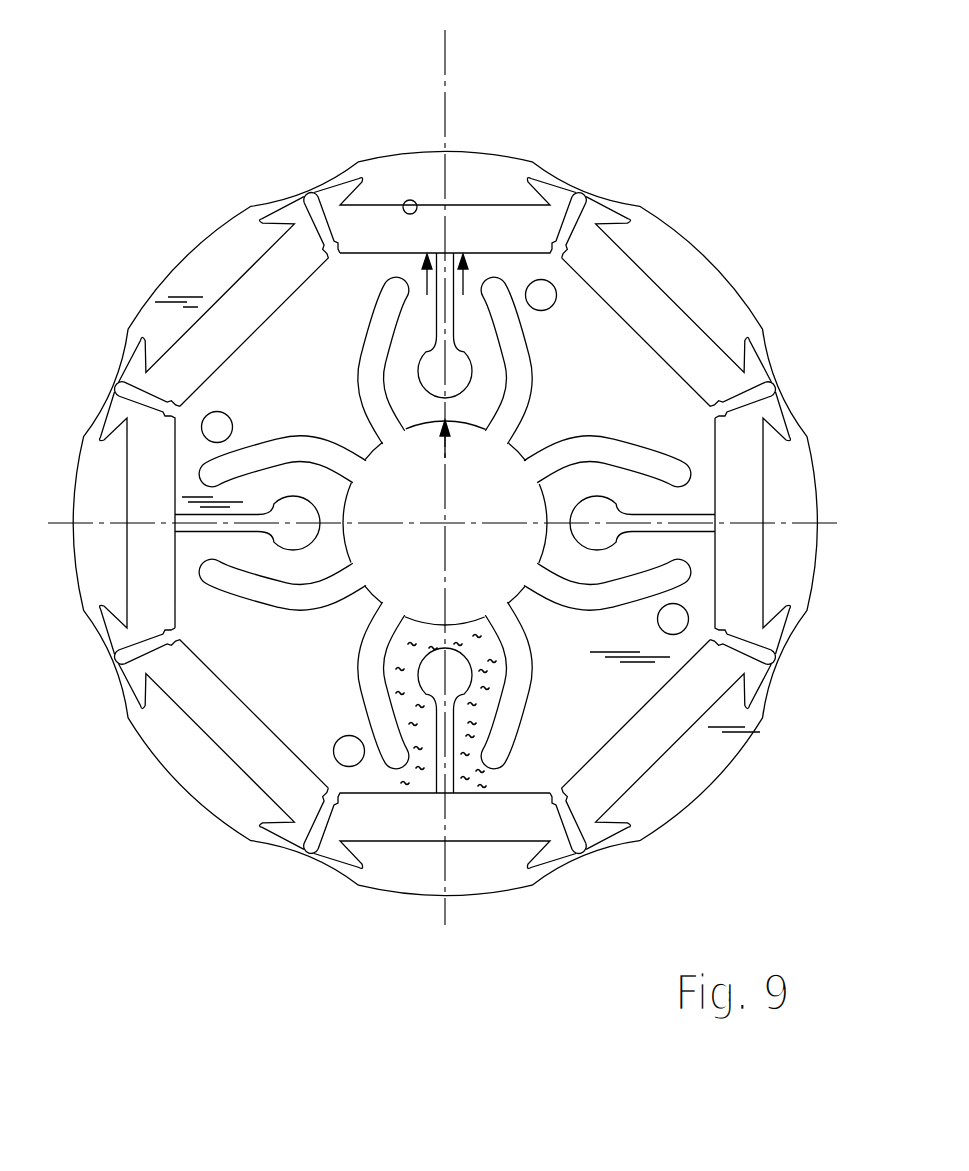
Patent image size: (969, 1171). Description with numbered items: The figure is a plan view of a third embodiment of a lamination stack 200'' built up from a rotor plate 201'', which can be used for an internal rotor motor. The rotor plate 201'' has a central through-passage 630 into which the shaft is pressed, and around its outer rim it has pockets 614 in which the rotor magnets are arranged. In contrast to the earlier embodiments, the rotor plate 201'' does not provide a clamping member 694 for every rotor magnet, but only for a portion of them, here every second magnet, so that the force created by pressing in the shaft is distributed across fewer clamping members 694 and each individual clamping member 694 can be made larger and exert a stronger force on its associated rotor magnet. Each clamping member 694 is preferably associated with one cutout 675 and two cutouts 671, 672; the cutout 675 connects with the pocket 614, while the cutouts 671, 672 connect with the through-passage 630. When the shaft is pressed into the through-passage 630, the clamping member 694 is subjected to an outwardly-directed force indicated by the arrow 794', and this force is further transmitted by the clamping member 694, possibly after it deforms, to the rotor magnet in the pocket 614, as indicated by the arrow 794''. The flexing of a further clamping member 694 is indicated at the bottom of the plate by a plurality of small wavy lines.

The lamination stack 200'' is at (442, 457).
The rotor plate 201'' is at (674, 302).
The pocket 614 is at (410, 200).
The through-passage 630 is at (540, 558).
The cutout 671 is at (382, 337).
The cutout 672 is at (517, 336).
The cutout 675 is at (445, 260).
The clamping member 694 is at (487, 387).
The arrow indicating outwardly-directed force 794' is at (407, 469).
The arrow indicating transmitted force 794'' is at (448, 202).